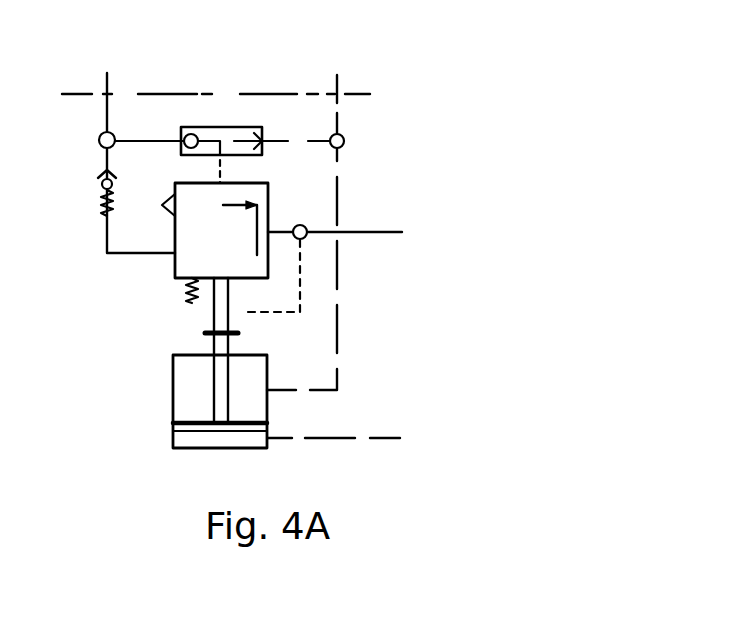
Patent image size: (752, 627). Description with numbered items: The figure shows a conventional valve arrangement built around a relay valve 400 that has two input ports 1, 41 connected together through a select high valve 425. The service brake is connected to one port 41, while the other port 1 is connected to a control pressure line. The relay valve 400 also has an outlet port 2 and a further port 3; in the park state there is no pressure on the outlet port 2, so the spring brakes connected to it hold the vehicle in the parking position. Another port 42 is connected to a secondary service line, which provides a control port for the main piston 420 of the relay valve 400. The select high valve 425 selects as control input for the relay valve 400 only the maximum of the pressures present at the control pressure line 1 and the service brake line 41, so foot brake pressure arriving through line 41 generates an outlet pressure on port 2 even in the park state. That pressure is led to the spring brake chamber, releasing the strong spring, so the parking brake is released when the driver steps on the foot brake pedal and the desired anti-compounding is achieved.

The input port 1 is at (134, 149).
The input port 41 is at (313, 217).
The select high valve 425 is at (241, 127).
The relay valve 400 is at (268, 213).
The third port 3 is at (158, 206).
The outlet port 2 is at (350, 234).
The main piston 420 is at (213, 372).
The port 42 is at (356, 439).